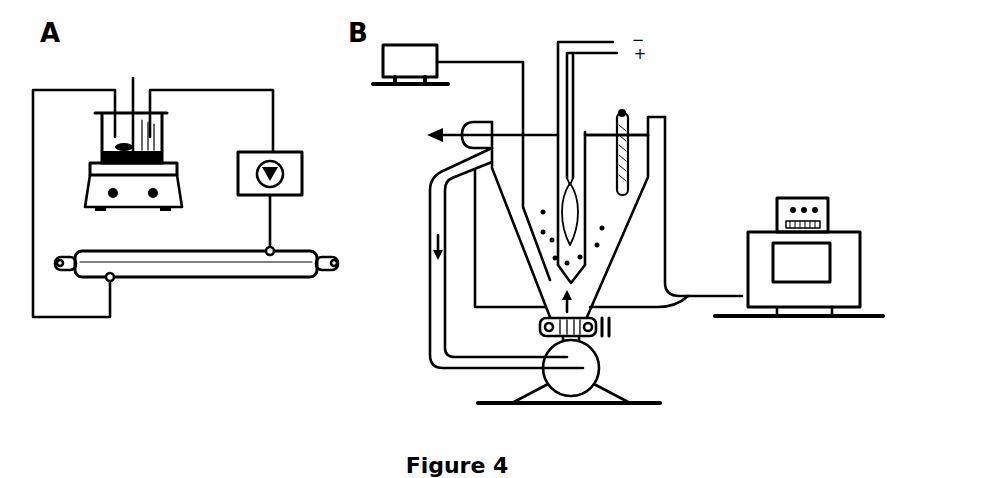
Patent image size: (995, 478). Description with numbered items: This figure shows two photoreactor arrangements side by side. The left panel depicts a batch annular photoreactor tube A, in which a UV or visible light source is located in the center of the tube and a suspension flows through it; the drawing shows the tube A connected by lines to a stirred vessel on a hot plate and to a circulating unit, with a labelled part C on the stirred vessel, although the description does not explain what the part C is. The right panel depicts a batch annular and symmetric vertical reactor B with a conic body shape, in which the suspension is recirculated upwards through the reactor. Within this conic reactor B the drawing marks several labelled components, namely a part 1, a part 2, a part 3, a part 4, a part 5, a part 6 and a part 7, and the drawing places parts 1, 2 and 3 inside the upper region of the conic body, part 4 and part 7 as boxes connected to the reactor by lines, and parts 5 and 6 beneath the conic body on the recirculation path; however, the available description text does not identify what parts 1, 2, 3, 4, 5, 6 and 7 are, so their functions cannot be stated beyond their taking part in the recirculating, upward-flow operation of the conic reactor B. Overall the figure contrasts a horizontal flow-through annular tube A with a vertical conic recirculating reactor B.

The reference electrode 1 is at (630, 147).
The working electrode 2 is at (587, 177).
The counter electrode 3 is at (616, 152).
The potentiostat 4 is at (448, 90).
The pump 5 is at (569, 369).
The valve 6 is at (584, 327).
The computer 7 is at (799, 257).
The batch annular photoreactor tube A is at (196, 273).
The batch annular and symmetric vertical reactor B is at (278, 173).
The stirrer C is at (133, 107).